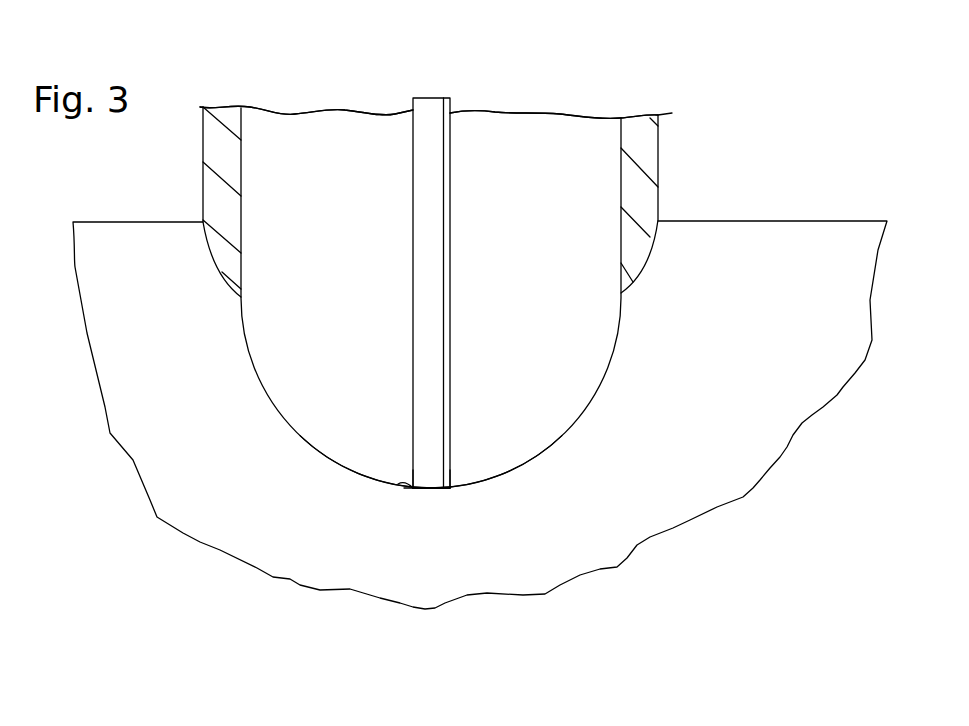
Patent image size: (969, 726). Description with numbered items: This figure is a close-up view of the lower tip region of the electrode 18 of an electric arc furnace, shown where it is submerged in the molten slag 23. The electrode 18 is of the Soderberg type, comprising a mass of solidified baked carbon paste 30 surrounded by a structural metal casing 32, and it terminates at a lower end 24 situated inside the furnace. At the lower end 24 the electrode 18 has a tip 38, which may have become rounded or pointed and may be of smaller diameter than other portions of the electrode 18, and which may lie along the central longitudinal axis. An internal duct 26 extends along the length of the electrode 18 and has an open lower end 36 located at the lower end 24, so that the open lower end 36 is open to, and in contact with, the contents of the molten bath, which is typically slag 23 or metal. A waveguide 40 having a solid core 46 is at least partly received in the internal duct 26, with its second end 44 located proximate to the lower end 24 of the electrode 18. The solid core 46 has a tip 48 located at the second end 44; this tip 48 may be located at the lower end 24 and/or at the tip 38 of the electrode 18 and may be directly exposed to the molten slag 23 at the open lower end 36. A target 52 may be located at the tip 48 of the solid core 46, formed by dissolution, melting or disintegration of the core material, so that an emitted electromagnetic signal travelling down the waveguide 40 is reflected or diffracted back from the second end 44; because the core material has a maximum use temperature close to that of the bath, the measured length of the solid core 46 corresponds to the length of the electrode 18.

The electrode 18 is at (571, 112).
The molten slag 23 is at (780, 425).
The lower end 24 is at (318, 452).
The internal duct 26 is at (413, 342).
The baked carbon paste 30 is at (287, 142).
The structural metal casing 32 is at (212, 187).
The open lower end 36 is at (400, 486).
The tip 38 is at (404, 490).
The waveguide 40 is at (447, 176).
The solid core 46 is at (438, 173).
The second end 44 is at (438, 482).
The tip 48 is at (433, 490).
The target 52 is at (433, 490).